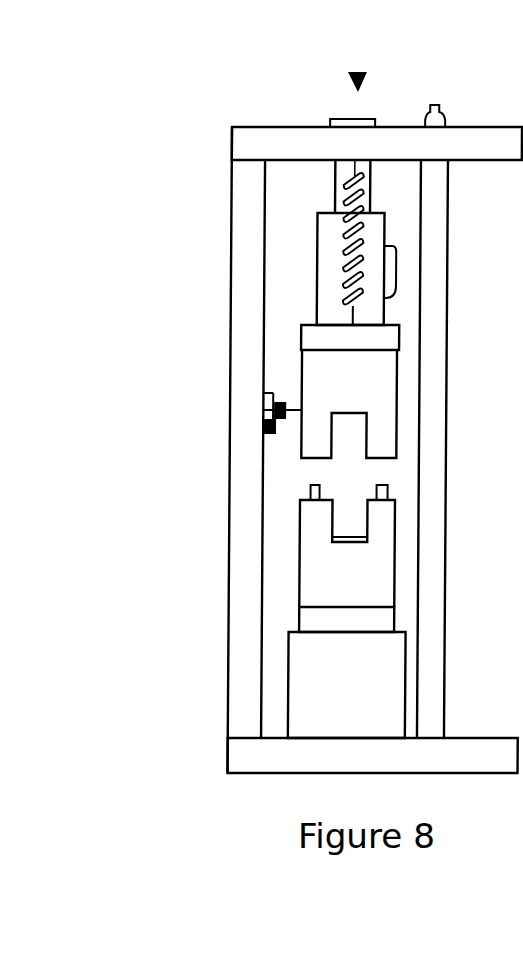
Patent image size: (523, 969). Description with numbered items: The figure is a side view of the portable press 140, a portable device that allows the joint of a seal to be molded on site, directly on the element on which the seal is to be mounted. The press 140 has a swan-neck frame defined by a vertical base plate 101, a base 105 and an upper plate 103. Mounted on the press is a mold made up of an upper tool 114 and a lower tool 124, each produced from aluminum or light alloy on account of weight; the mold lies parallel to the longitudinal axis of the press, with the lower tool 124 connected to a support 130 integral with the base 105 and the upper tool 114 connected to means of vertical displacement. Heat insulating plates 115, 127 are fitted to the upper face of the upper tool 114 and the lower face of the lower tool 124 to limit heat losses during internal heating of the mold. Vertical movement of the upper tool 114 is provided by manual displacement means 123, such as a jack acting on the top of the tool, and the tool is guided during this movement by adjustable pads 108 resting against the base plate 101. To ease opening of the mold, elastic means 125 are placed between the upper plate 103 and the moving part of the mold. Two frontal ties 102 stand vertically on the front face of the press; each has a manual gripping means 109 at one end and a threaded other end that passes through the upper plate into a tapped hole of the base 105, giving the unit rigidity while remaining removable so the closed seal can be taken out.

The portable press 140 is at (192, 55).
The manual gripping means 109 is at (424, 110).
The upper plate 103 is at (242, 152).
The elastic means 125 is at (350, 236).
The manual displacement means 123 is at (328, 298).
The vertical base plate 101 is at (242, 320).
The heat insulating plate 115 is at (316, 343).
The upper tool 114 is at (316, 370).
The adjustable pads 108 is at (265, 430).
The lower tool 124 is at (319, 574).
The heat insulating plate 127 is at (204, 590).
The frontal ties 102 is at (432, 670).
The support 130 is at (333, 718).
The base 105 is at (297, 763).